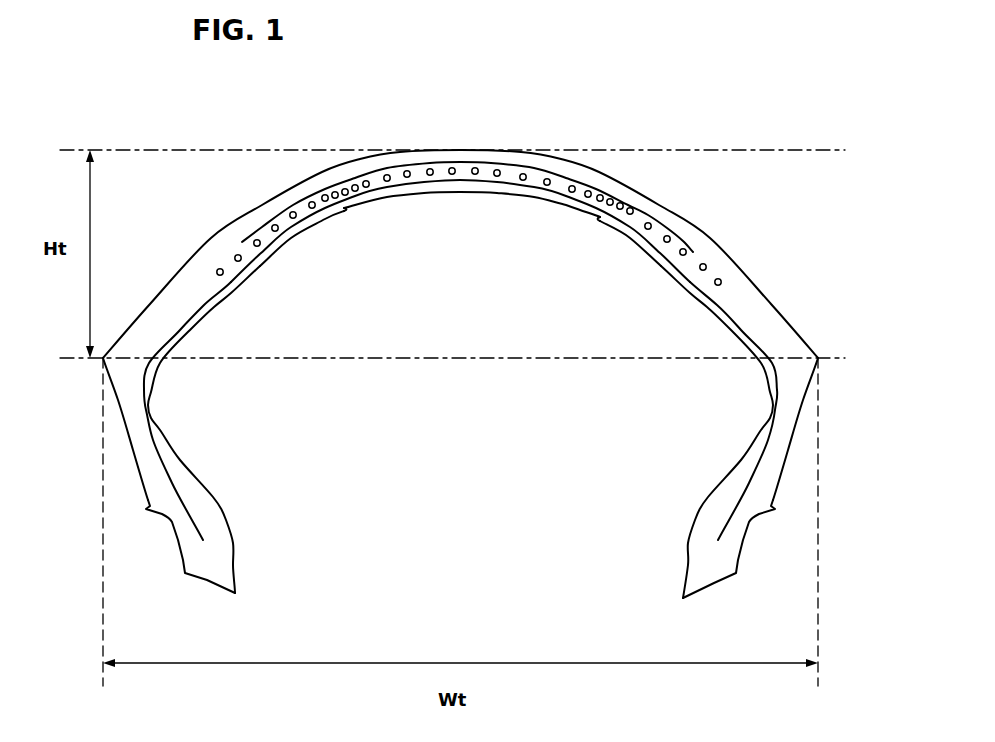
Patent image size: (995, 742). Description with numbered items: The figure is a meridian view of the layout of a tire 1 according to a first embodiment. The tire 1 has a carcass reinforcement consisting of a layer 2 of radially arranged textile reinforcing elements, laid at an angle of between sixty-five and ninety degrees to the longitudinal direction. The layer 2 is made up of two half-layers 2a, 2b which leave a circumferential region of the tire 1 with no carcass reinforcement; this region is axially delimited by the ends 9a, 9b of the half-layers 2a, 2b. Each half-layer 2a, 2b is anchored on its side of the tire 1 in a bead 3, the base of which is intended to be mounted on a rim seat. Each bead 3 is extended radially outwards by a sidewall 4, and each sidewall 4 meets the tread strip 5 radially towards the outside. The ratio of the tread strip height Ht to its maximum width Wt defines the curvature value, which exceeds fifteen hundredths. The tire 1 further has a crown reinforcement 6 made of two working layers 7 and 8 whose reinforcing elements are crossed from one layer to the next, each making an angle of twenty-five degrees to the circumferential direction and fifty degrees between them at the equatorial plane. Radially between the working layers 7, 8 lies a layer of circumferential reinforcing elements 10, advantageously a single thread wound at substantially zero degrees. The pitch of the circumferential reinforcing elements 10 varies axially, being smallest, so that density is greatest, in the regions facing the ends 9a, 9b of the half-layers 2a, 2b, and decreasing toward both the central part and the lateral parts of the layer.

The tire 1 is at (573, 118).
The layer 2 is at (713, 326).
The half-layer 2a is at (173, 483).
The half-layer 2b is at (745, 498).
The bead 3 is at (217, 560).
The sidewall 4 is at (130, 417).
The tread strip 5 is at (318, 172).
The crown reinforcement 6 is at (705, 218).
The layer 7 is at (260, 227).
The layer 8 is at (638, 222).
The end of half-layer 9a is at (341, 211).
The end of half-layer 9b is at (597, 221).
The circumferential reinforcing elements 10 is at (405, 178).